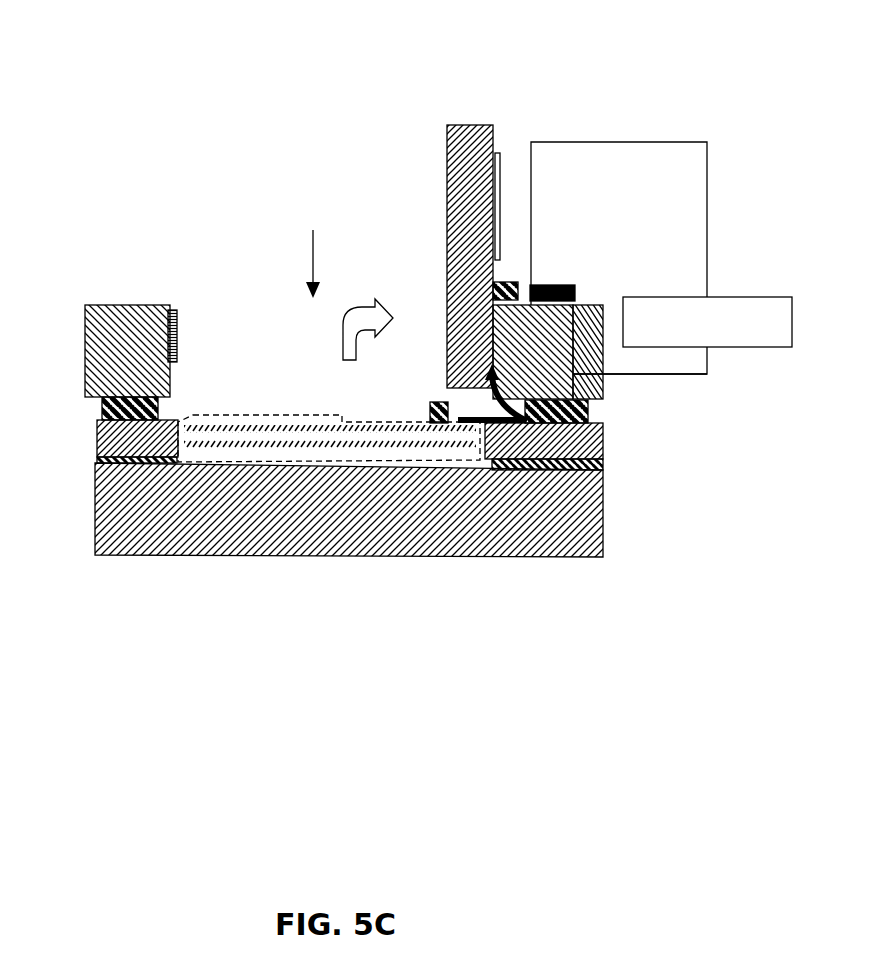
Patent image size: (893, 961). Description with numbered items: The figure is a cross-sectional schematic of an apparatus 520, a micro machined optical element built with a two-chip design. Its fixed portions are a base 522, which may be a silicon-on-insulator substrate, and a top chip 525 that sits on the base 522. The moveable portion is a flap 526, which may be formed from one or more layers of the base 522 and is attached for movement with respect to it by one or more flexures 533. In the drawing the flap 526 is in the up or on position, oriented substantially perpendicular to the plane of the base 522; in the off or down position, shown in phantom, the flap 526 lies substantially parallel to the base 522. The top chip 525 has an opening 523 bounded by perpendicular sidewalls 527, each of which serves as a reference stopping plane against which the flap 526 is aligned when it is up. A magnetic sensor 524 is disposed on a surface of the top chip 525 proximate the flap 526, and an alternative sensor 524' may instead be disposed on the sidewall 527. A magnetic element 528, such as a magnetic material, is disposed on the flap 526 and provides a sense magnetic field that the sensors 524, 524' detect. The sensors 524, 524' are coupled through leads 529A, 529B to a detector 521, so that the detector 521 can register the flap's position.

The apparatus 520 is at (128, 123).
The detector 521 is at (717, 297).
The base 522 is at (603, 488).
The opening 523 is at (307, 250).
The magnetic sensor 524 is at (575, 311).
The magnetic sensor 524' is at (166, 316).
The top chip 525 is at (603, 386).
The flap 526 is at (496, 125).
The sidewall 527 is at (168, 387).
The magnetic element 528 is at (500, 283).
The lead 529A is at (670, 140).
The lead 529B is at (687, 377).
The flexure 533 is at (493, 395).